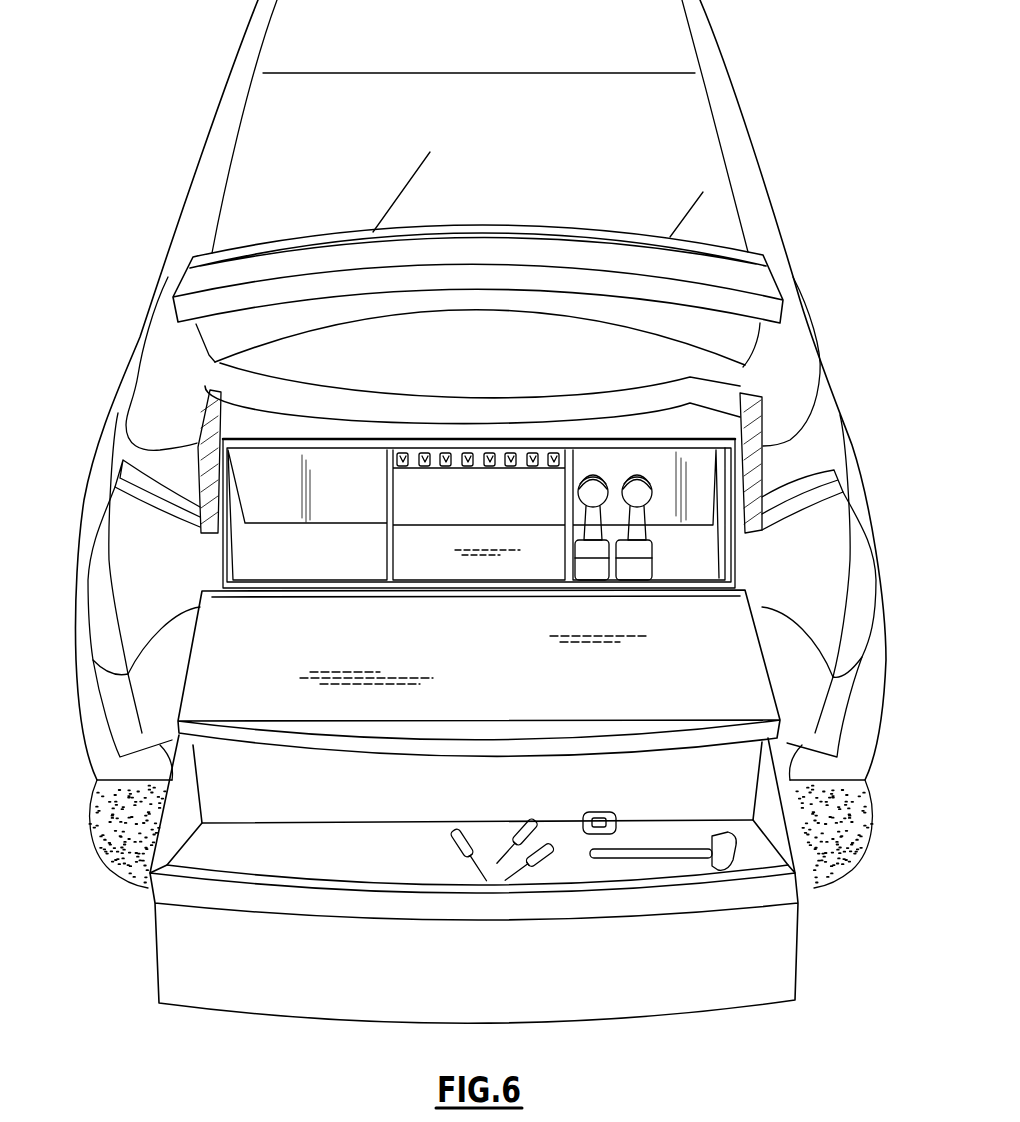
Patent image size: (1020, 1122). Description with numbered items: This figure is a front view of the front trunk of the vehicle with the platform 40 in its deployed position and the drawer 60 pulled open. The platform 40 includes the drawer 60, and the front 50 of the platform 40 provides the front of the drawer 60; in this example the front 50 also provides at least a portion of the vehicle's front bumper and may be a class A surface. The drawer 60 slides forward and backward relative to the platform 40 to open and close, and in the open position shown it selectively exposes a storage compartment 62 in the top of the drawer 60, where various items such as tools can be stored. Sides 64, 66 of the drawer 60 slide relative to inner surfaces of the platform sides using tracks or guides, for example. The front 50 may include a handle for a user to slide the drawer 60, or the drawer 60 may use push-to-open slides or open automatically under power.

The platform 40 is at (137, 805).
The front 50 is at (412, 986).
The drawer 60 is at (497, 897).
The storage compartment 62 is at (242, 846).
The side of the drawer 64 is at (153, 944).
The side of the drawer 66 is at (803, 937).